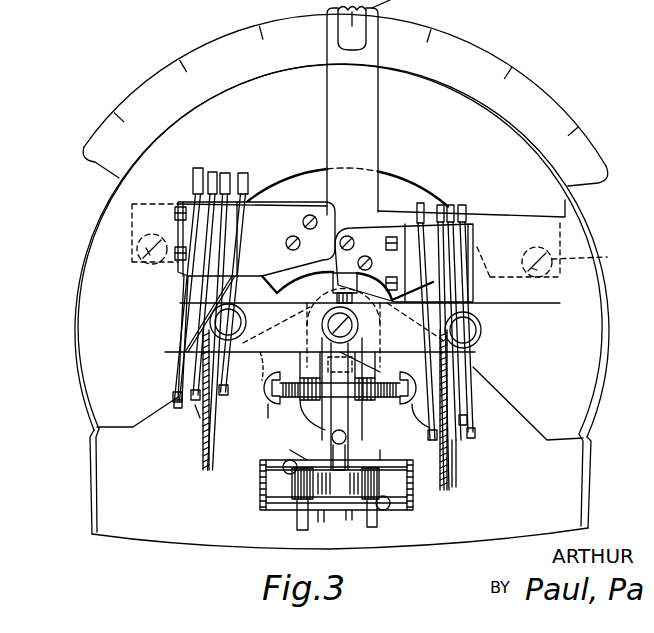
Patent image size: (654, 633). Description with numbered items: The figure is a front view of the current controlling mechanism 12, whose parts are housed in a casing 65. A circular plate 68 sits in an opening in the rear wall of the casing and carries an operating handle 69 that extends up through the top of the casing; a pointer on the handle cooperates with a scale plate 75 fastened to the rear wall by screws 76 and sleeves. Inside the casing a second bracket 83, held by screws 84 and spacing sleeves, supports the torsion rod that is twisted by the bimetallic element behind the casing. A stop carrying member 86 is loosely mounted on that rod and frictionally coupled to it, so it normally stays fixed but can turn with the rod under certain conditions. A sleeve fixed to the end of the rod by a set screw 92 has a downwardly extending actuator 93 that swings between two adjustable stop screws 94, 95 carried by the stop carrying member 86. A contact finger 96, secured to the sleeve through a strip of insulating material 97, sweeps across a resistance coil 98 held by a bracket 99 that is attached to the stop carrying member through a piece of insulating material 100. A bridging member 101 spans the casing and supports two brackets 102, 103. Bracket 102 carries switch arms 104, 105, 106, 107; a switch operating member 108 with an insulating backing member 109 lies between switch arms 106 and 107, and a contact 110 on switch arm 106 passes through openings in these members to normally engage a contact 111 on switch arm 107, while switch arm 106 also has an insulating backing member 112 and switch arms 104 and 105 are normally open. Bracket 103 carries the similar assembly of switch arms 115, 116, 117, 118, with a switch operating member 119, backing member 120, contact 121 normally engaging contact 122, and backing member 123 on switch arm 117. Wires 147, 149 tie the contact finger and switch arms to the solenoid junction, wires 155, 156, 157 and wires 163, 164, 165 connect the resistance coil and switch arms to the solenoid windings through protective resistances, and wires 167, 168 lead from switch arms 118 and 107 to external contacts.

The current controlling mechanism 12 is at (606, 88).
The casing 65 is at (591, 430).
The circular plate 68 is at (268, 366).
The operating handle 69 is at (372, 133).
The scale plate 75 is at (150, 182).
The screws 76 is at (137, 249).
The second bracket 83 is at (303, 348).
The screws 84 is at (243, 321).
The stop carrying member 86 is at (318, 421).
The set screw 92 is at (318, 284).
The actuator 93 is at (331, 414).
The adjustable stop screw 94 is at (268, 405).
The adjustable stop screw 95 is at (411, 406).
The contact finger 96 is at (348, 508).
The strip of insulating material 97 is at (373, 360).
The resistance coil 98 is at (322, 512).
The bracket 99 is at (275, 498).
The piece of insulating material 100 is at (307, 461).
The bridging member 101 is at (95, 337).
The bracket 102 is at (287, 213).
The bracket 103 is at (378, 232).
The switch arm 104 is at (185, 322).
The switch arm 105 is at (195, 353).
The switch arm 106 is at (206, 418).
The switch arm 107 is at (222, 375).
The switch operating member 108 is at (203, 455).
The backing member 109 is at (210, 446).
The contact 110 is at (219, 390).
The contact 111 is at (220, 402).
The backing member 112 is at (197, 412).
The switch arm 115 is at (474, 367).
The switch arm 116 is at (468, 438).
The switch arm 117 is at (453, 440).
The switch arm 118 is at (431, 427).
The switch operating member 119 is at (452, 488).
The backing member 120 is at (446, 487).
The contact 121 is at (430, 437).
The contact 122 is at (440, 441).
The backing member 123 is at (463, 440).
The wire 147 is at (195, 173).
The wire 149 is at (442, 200).
The wire 155 is at (373, 528).
The wire 156 is at (467, 202).
The wire 157 is at (227, 173).
The wire 163 is at (278, 549).
The wire 164 is at (209, 170).
The wire 165 is at (433, 200).
The wire 167 is at (408, 200).
The wire 168 is at (243, 173).